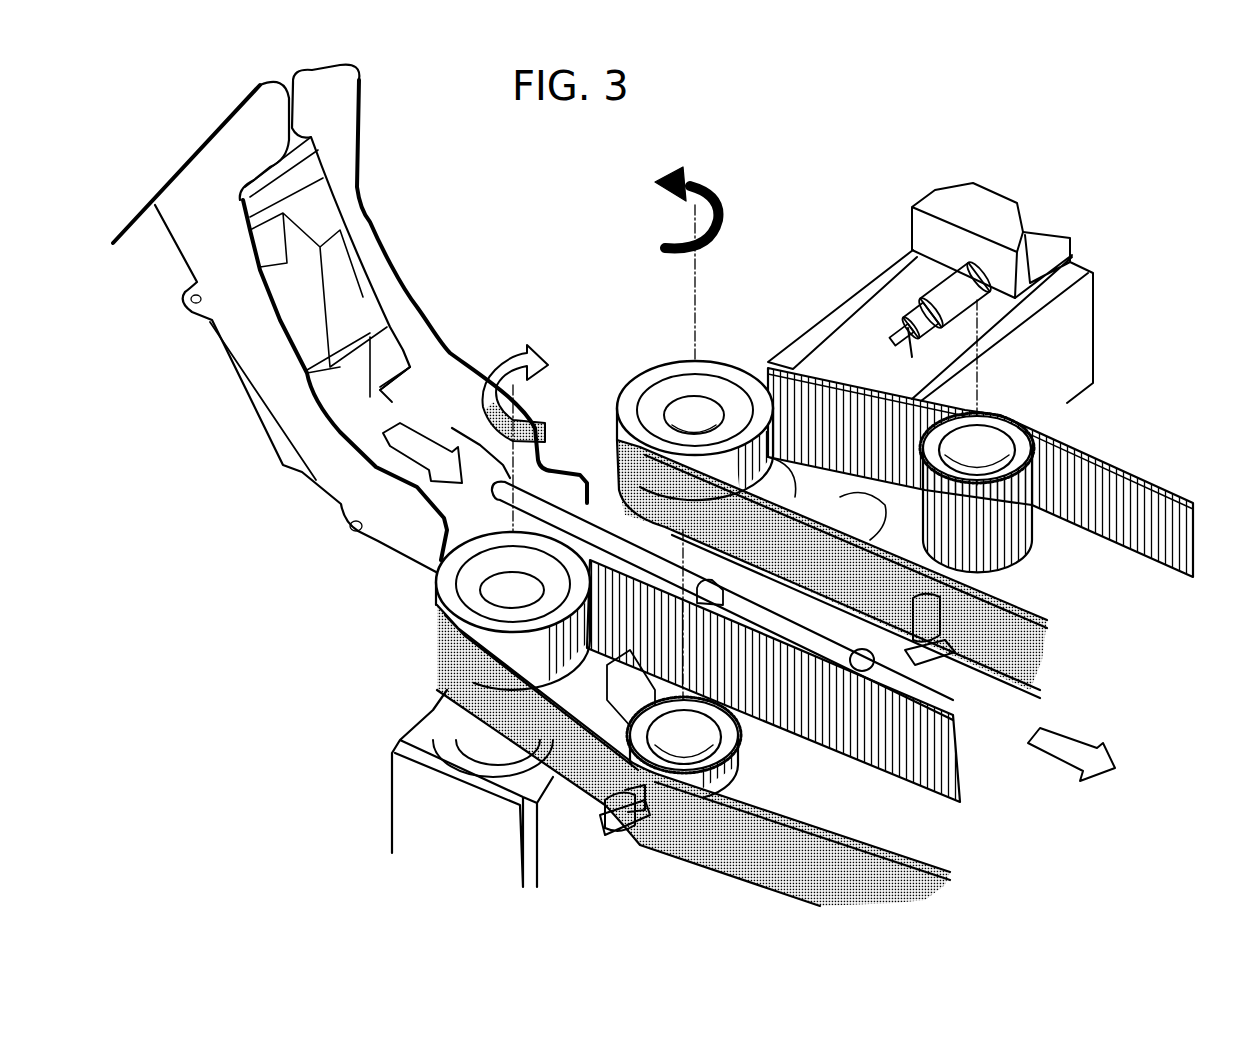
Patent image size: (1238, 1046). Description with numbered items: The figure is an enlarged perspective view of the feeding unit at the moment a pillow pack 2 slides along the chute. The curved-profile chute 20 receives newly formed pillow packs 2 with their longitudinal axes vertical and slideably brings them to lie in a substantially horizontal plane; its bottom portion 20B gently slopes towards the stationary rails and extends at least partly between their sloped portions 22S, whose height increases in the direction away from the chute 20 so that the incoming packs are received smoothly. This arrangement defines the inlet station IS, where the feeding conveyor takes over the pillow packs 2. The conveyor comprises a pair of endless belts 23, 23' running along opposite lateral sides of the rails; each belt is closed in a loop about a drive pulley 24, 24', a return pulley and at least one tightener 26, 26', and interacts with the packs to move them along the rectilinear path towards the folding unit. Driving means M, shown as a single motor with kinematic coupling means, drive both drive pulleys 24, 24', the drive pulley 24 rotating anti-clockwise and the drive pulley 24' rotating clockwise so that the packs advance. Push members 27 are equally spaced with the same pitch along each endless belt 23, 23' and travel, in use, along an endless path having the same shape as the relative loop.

The pillow pack 2 is at (355, 277).
The curved-profile chute 20 is at (240, 343).
The bottom portion 20B is at (422, 418).
The sloped portion 22S is at (588, 517).
The inlet station IS is at (530, 520).
The drive pulley 24 is at (695, 333).
The driving means M is at (903, 298).
The tightener 26 is at (1024, 436).
The endless belt 23 is at (905, 533).
The push member 27 is at (875, 663).
The drive pulley 24' is at (471, 616).
The tightener 26' is at (684, 723).
The endless belt 23' is at (698, 746).